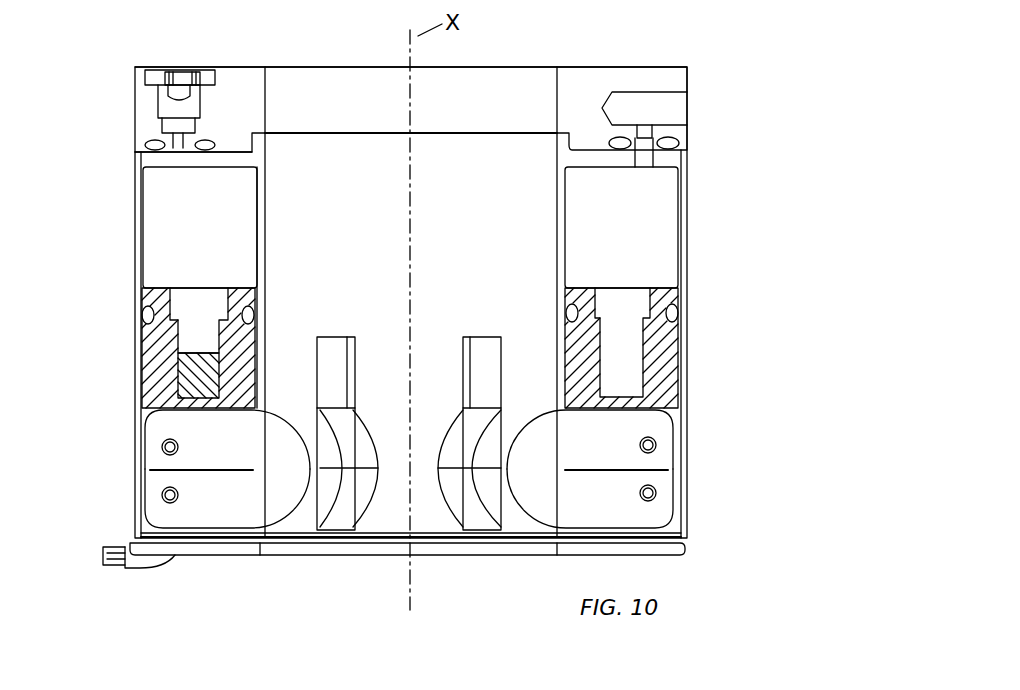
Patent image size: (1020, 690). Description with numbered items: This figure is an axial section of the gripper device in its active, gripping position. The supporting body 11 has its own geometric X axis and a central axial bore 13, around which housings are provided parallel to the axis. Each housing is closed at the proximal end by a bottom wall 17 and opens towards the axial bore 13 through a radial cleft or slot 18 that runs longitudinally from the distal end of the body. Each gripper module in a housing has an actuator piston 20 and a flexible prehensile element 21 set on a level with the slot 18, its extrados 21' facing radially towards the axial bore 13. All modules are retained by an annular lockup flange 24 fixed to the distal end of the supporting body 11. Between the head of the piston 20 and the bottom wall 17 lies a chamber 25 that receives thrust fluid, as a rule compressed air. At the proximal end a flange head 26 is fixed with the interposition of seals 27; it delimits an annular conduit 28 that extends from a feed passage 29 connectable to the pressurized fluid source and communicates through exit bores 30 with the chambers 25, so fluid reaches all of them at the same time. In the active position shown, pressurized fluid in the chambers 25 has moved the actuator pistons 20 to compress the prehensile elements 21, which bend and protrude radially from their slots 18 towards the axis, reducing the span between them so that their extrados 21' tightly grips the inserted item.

The supporting body 11 is at (135, 246).
The axial bore 13 is at (488, 155).
The bottom wall 17 is at (231, 152).
The radial cleft or slot 18 is at (335, 337).
The actuator piston 20 is at (666, 355).
The flexible prehensile element 21 is at (637, 430).
The extrados 21' is at (574, 554).
The annular lockup flange 24 is at (200, 550).
The chamber 25 is at (672, 230).
The flange head 26 is at (616, 67).
The seals 27 is at (684, 143).
The annular conduit 28 is at (180, 148).
The feed passage 29 is at (687, 108).
The exit bores / plug 30 is at (178, 162).